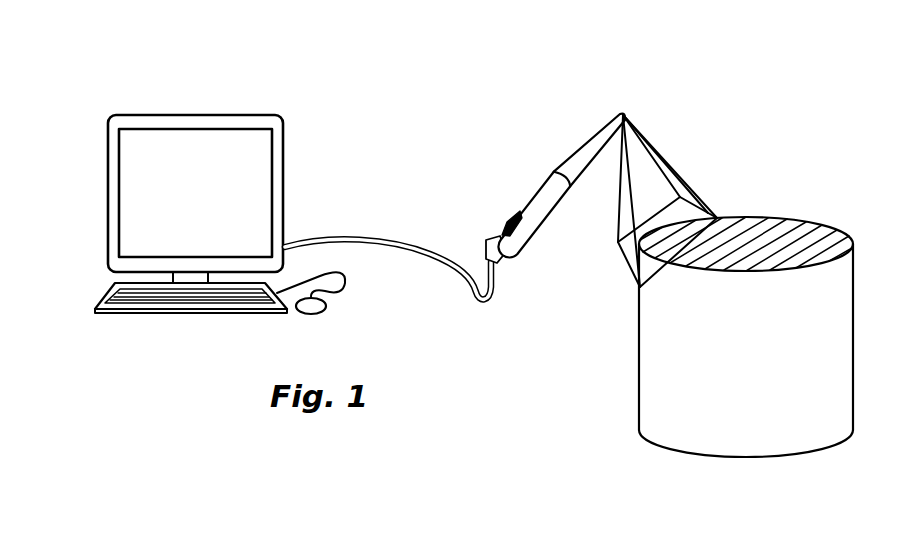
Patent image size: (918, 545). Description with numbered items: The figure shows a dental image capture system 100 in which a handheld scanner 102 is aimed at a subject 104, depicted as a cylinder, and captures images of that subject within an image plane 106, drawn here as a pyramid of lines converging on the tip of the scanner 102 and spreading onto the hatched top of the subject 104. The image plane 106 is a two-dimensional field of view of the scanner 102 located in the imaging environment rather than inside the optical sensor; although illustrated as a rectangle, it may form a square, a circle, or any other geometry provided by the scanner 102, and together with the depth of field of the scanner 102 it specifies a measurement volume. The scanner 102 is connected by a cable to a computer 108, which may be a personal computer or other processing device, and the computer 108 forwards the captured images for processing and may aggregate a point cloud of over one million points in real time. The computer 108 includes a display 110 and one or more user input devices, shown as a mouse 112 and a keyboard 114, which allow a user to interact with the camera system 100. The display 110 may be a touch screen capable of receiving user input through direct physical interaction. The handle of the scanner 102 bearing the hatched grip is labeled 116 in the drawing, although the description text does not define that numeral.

The image capture system 100 is at (706, 65).
The scanner 102 is at (623, 112).
The subject 104 is at (638, 398).
The image plane 106 is at (716, 203).
The computer 108 is at (62, 179).
The display 110 is at (228, 114).
The mouse 112 is at (327, 310).
The keyboard 114 is at (100, 294).
The probe handle 116 is at (513, 210).